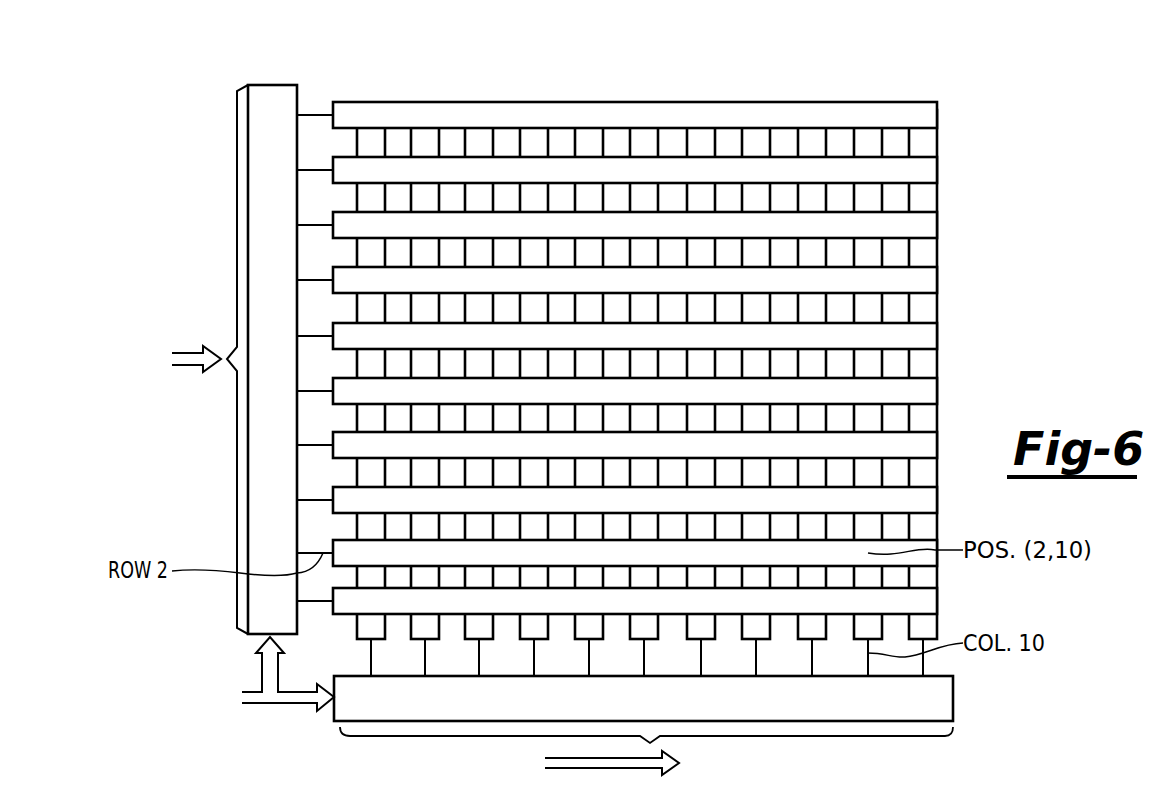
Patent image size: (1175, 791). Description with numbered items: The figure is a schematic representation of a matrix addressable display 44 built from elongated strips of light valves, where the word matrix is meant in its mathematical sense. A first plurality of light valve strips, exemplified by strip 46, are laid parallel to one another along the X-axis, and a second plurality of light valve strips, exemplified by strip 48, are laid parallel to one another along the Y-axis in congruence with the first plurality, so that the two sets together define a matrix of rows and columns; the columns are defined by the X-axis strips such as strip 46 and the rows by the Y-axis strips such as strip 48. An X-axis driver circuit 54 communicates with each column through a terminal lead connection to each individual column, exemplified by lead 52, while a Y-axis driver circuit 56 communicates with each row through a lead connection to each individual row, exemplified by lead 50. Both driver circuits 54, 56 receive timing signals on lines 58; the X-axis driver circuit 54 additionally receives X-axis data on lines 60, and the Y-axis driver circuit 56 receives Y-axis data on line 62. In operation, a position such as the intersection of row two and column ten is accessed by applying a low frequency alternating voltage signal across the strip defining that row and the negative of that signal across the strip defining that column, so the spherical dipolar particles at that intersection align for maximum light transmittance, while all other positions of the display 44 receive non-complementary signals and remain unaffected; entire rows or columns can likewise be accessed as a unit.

The matrix addressable display 44 is at (611, 363).
The light valve strip 46 is at (364, 627).
The light valve strip 48 is at (349, 106).
The lead 50 is at (313, 114).
The lead 52 is at (370, 651).
The X-axis driver circuit 54 is at (940, 694).
The Y-axis driver circuit 56 is at (274, 93).
The lines 58 is at (257, 692).
The lines 60 is at (543, 768).
The line 62 is at (183, 352).